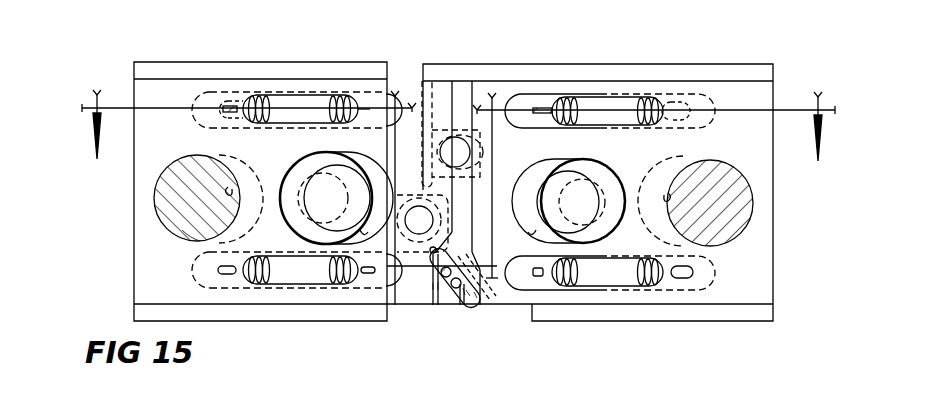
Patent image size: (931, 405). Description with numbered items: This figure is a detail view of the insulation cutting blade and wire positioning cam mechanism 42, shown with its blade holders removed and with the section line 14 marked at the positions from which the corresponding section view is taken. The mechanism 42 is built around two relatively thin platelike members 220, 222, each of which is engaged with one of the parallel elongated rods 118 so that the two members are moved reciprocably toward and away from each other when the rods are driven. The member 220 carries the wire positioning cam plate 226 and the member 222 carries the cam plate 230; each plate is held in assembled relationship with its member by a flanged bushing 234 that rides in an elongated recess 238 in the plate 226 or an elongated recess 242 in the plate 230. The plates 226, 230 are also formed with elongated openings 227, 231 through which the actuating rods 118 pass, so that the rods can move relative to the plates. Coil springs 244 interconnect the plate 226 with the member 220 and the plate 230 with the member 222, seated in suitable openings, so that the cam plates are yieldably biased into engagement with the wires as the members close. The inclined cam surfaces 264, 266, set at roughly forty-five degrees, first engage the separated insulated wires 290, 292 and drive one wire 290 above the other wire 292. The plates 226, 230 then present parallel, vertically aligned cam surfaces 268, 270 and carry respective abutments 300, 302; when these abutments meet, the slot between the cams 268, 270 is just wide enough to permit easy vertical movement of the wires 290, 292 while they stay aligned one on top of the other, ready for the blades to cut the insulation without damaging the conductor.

The section line 14- 14 is at (460, 197).
The blade mechanism 42 is at (621, 28).
The elongated rod 118 is at (182, 230).
The platelike member 220 is at (378, 280).
The platelike member 222 is at (542, 280).
The wire positioning cam plate 226 is at (134, 245).
The elongated opening 227 is at (230, 187).
The wire positioning cam plate 230 is at (773, 247).
The elongated opening 231 is at (590, 175).
The flanged bushing 234 is at (312, 167).
The elongated recess 238 is at (330, 245).
The elongated recess 242 is at (559, 241).
The coil spring 244 is at (337, 282).
The cam surface 264 is at (459, 286).
The cam surface 266 is at (468, 292).
The cam surface 268 is at (438, 282).
The cam surface 270 is at (466, 288).
The insulated wire 290 is at (433, 283).
The insulated wire 292 is at (475, 295).
The abutment 300 is at (453, 89).
The abutment 302 is at (465, 147).